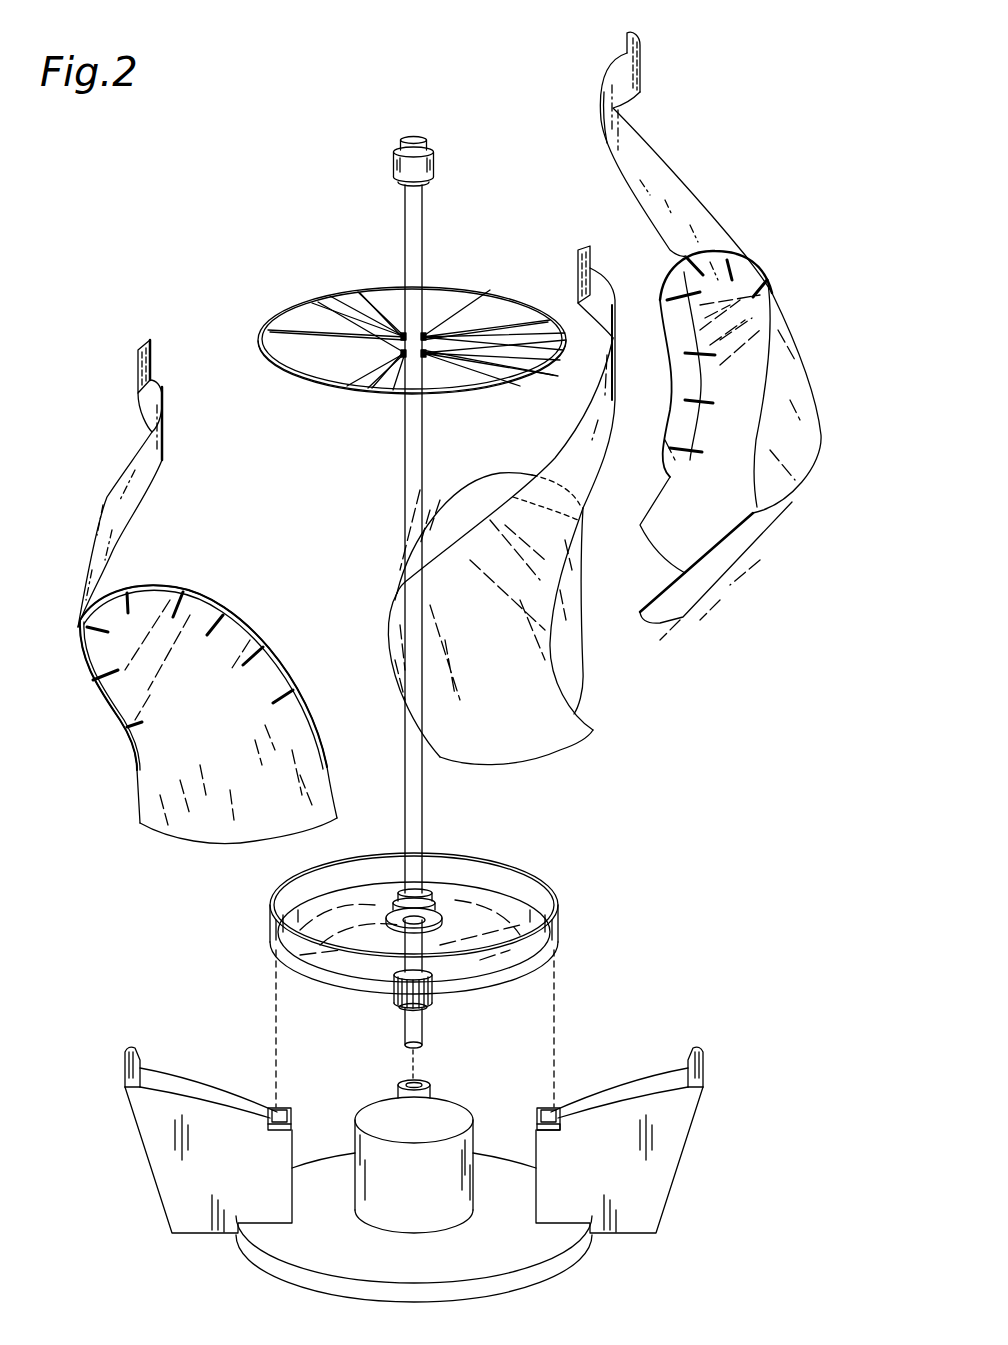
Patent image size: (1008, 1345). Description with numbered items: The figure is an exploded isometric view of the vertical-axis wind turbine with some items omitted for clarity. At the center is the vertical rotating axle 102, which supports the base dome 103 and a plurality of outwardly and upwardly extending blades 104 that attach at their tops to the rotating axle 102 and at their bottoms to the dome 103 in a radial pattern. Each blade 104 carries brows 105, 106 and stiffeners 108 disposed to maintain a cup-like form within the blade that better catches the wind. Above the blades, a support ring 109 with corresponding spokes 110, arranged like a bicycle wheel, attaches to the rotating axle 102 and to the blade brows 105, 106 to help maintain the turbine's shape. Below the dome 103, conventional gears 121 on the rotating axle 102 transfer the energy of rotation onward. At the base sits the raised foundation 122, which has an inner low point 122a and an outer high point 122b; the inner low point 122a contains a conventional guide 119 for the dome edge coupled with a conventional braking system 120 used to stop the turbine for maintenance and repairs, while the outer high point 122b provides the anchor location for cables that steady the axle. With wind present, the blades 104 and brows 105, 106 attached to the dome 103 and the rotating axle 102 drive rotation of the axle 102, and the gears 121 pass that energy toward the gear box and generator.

The vertical rotating axle 102 is at (417, 242).
The dome 103 is at (500, 863).
The blades 104 is at (425, 437).
The brow 105 is at (247, 617).
The brow 106 is at (98, 693).
The stiffeners 108 is at (688, 452).
The support rings 109 is at (412, 320).
The spokes 110 is at (440, 332).
The guide 119 is at (557, 1132).
The braking system 120 is at (543, 1132).
The gears 121 is at (430, 998).
The foundation 122 is at (208, 1140).
The inner low point 122a is at (273, 1133).
The outer high point 122b is at (661, 1140).